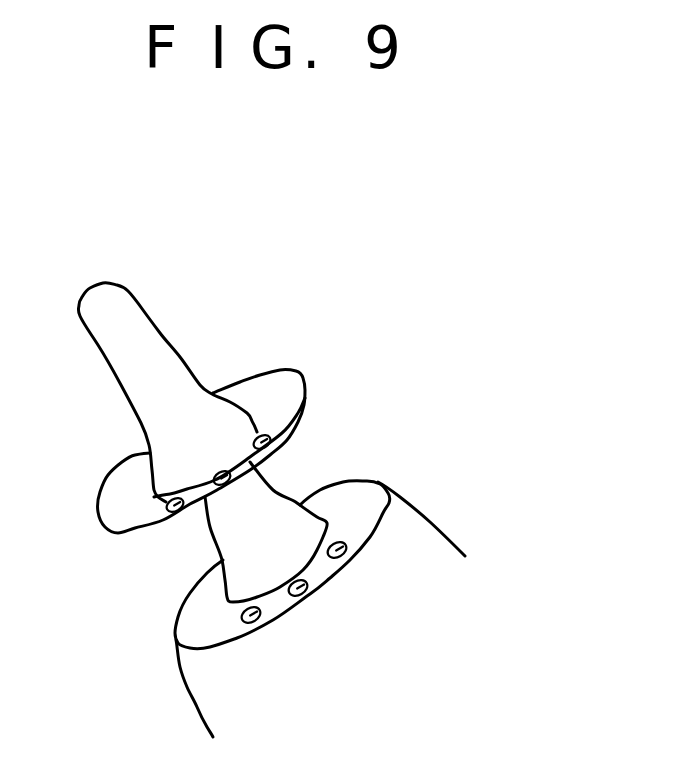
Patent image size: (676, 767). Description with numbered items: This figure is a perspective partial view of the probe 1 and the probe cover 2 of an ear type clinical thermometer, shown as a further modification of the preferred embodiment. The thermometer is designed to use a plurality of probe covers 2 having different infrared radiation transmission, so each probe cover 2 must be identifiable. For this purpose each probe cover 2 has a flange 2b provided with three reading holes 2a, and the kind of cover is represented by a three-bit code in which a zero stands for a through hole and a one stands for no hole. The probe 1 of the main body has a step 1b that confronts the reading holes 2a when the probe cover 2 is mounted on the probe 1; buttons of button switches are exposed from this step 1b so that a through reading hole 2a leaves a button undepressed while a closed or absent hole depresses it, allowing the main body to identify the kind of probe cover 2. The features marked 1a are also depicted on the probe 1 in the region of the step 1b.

The probe 1 is at (343, 497).
The pins of first rotary member 1a is at (342, 555).
The step 1b is at (372, 503).
The probe cover 2 is at (158, 336).
The reading holes 2a is at (265, 434).
The flange 2b is at (240, 392).